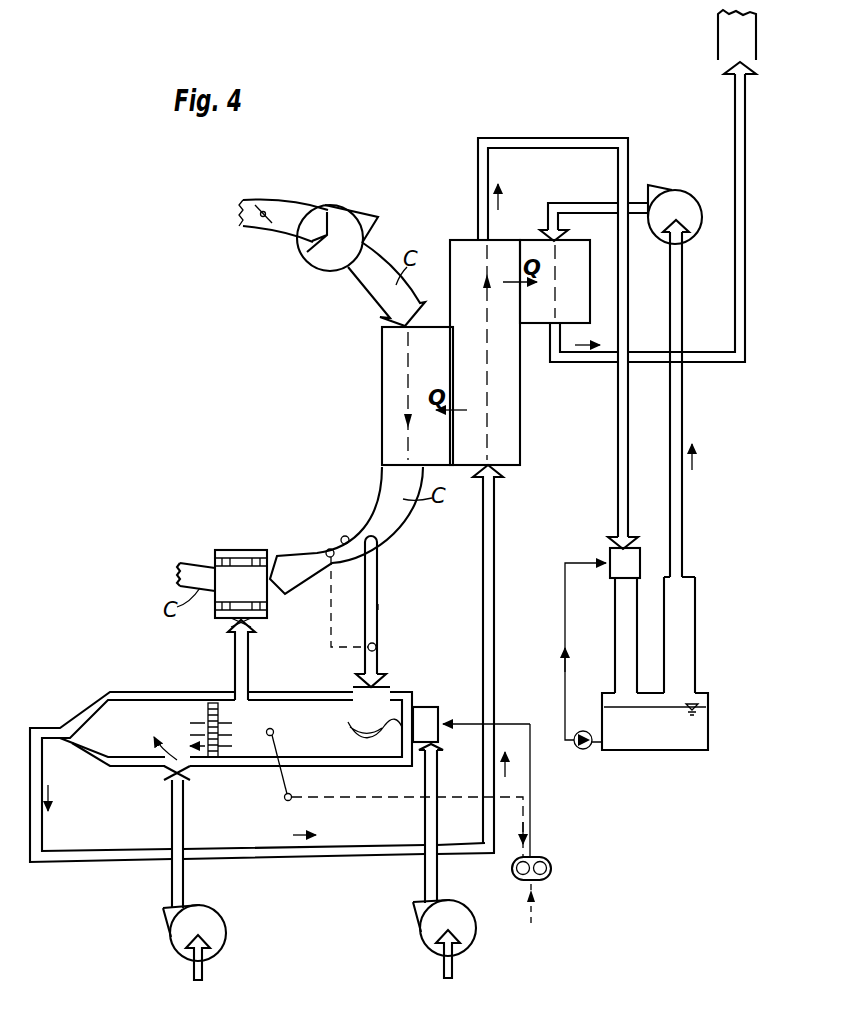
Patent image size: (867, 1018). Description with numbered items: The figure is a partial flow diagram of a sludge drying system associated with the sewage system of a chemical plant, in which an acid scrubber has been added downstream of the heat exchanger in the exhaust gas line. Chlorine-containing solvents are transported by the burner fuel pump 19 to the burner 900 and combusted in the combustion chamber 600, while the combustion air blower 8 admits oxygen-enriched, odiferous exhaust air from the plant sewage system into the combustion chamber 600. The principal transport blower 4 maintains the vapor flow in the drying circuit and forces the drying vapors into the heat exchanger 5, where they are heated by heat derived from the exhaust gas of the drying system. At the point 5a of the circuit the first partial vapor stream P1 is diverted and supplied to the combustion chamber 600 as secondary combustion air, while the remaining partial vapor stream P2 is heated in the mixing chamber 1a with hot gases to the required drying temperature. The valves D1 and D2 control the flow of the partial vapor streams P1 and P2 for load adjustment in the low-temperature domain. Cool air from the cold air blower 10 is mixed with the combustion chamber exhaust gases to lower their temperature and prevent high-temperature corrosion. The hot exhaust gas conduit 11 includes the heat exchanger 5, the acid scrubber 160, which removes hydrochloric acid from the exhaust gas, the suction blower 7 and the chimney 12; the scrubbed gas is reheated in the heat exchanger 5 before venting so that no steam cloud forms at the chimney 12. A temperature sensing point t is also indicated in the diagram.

The mixing chamber 1a is at (242, 548).
The principal transport blower 4 is at (311, 262).
The heat exchanger 5 is at (385, 400).
The point of the circuit 5a is at (379, 540).
The suction blower 7 is at (683, 212).
The combustion air blower 8 is at (451, 908).
The cold air blower 10 is at (213, 930).
The exhaust gas conduit 11 is at (492, 512).
The chimney 12 is at (718, 30).
The burner fuel pump 19 is at (538, 857).
The acid scrubber 160 is at (707, 626).
The combustion chamber 600 is at (286, 694).
The burner 900 is at (430, 717).
The first partial vapor stream P1 is at (378, 607).
The remaining partial vapor stream P2 is at (343, 537).
The valve D1 is at (377, 648).
The valve D2 is at (327, 552).
The temperature sensor t is at (279, 773).